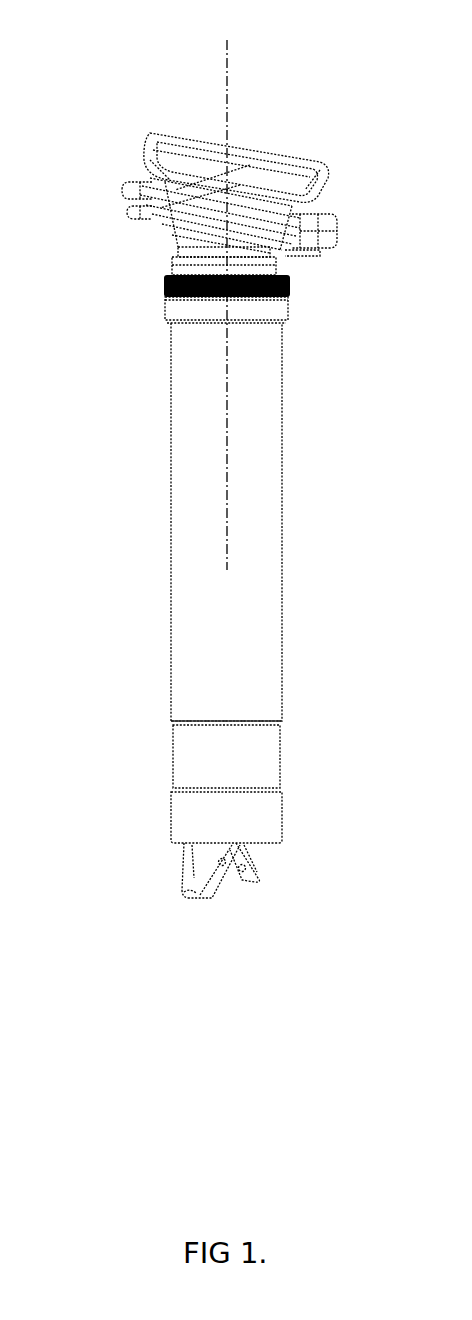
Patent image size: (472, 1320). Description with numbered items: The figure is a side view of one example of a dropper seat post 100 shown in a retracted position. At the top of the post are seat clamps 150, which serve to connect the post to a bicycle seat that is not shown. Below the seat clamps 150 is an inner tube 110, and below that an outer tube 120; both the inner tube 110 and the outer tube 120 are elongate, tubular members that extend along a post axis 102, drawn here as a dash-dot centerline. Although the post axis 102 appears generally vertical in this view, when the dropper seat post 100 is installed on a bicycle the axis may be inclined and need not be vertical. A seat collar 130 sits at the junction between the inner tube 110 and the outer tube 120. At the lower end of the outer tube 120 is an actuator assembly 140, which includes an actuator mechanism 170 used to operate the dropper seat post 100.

The dropper seat post 100 is at (335, 87).
The post axis 102 is at (227, 112).
The inner tube 110 is at (172, 237).
The outer tube 120 is at (281, 405).
The seat collar 130 is at (290, 283).
The actuator assembly 140 is at (215, 898).
The seat clamps 150 is at (145, 132).
The actuator mechanism 170 is at (258, 880).